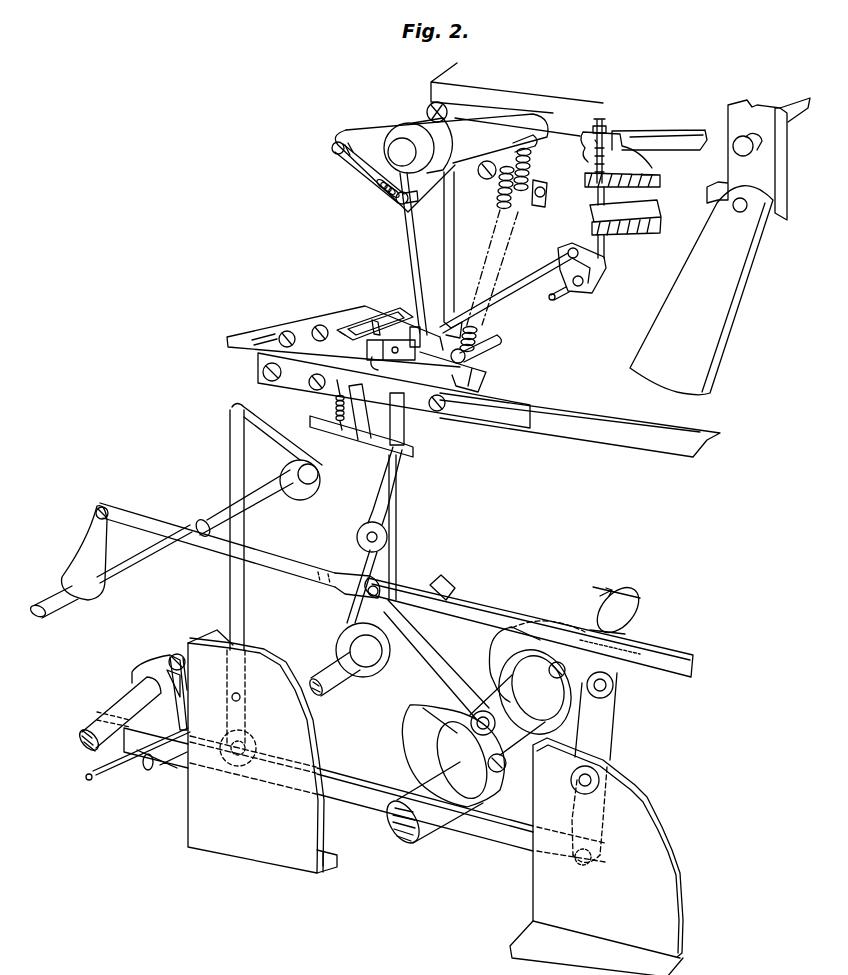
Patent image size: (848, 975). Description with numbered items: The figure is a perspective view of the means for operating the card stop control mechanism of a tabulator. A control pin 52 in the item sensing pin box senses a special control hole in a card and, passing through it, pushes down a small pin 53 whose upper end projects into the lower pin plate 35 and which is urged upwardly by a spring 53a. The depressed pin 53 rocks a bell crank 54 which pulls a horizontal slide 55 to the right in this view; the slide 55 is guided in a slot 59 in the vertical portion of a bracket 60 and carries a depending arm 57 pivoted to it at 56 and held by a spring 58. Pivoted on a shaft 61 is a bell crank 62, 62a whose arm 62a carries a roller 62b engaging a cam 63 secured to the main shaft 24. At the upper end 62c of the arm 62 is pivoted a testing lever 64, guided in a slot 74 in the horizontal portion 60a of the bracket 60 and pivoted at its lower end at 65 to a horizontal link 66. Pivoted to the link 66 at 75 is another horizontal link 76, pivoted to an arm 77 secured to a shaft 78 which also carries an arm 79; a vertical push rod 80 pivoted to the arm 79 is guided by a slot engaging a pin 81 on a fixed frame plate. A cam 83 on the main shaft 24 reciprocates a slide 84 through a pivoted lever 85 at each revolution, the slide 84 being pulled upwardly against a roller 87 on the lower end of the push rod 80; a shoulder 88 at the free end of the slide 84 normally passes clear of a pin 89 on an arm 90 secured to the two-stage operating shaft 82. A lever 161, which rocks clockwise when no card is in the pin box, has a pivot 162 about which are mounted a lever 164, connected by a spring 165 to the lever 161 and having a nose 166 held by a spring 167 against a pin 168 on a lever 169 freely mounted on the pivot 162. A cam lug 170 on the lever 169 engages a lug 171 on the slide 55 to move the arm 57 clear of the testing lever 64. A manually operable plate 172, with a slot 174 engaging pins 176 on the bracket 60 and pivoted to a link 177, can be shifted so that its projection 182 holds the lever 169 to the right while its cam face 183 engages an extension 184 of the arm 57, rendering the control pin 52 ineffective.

The main shaft 24 is at (390, 833).
The lower pin plate 35 is at (660, 217).
The control pin 52 is at (600, 123).
The small pin 53 is at (607, 242).
The spring 53a is at (558, 288).
The bell crank 54 is at (597, 277).
The horizontal slide 55 is at (517, 290).
The pivot 56 is at (463, 370).
The depending arm 57 is at (372, 407).
The spring 58 is at (335, 407).
The slot 59 is at (380, 357).
The bracket 60 is at (257, 373).
The horizontal portion of bracket 60a is at (328, 417).
The shaft 61 is at (445, 590).
The bell crank arm 62 is at (396, 557).
The bell crank arm 62a is at (397, 677).
The roller 62b is at (476, 698).
The upper end of arm 62 62c is at (378, 538).
The cam 63 is at (418, 733).
The testing lever 64 is at (405, 458).
The pivot 65 is at (368, 592).
The horizontal link 66 is at (660, 653).
The slot 74 is at (410, 428).
The pivot 75 is at (475, 605).
The horizontal link 76 is at (284, 567).
The arm 77 is at (92, 535).
The shaft 78 is at (135, 558).
The arm 79 is at (268, 467).
The vertical push rod 80 is at (229, 597).
The pin 81 is at (250, 700).
The two-stage operating shaft 82 is at (130, 698).
The cam 83 is at (558, 660).
The slide 84 is at (508, 833).
The pivoted lever 85 is at (600, 733).
The roller 87 is at (257, 741).
The shoulder 88 is at (133, 760).
The pin 89 is at (147, 770).
The arm 90 is at (150, 660).
The lever 161 is at (667, 130).
The pivot 162 is at (400, 150).
The lever 164 is at (480, 133).
The spring 165 is at (540, 182).
The nose 166 is at (398, 196).
The spring 167 is at (363, 168).
The pin 168 is at (407, 192).
The lever 169 is at (440, 222).
The cam lug 170 is at (447, 320).
The lug 171 is at (416, 330).
The plate 172 is at (317, 332).
The slot 174 is at (233, 333).
The pins 176 is at (270, 332).
The link 177 is at (677, 445).
The projection 182 is at (373, 313).
The cam face 183 is at (368, 318).
The extension 184 is at (366, 312).